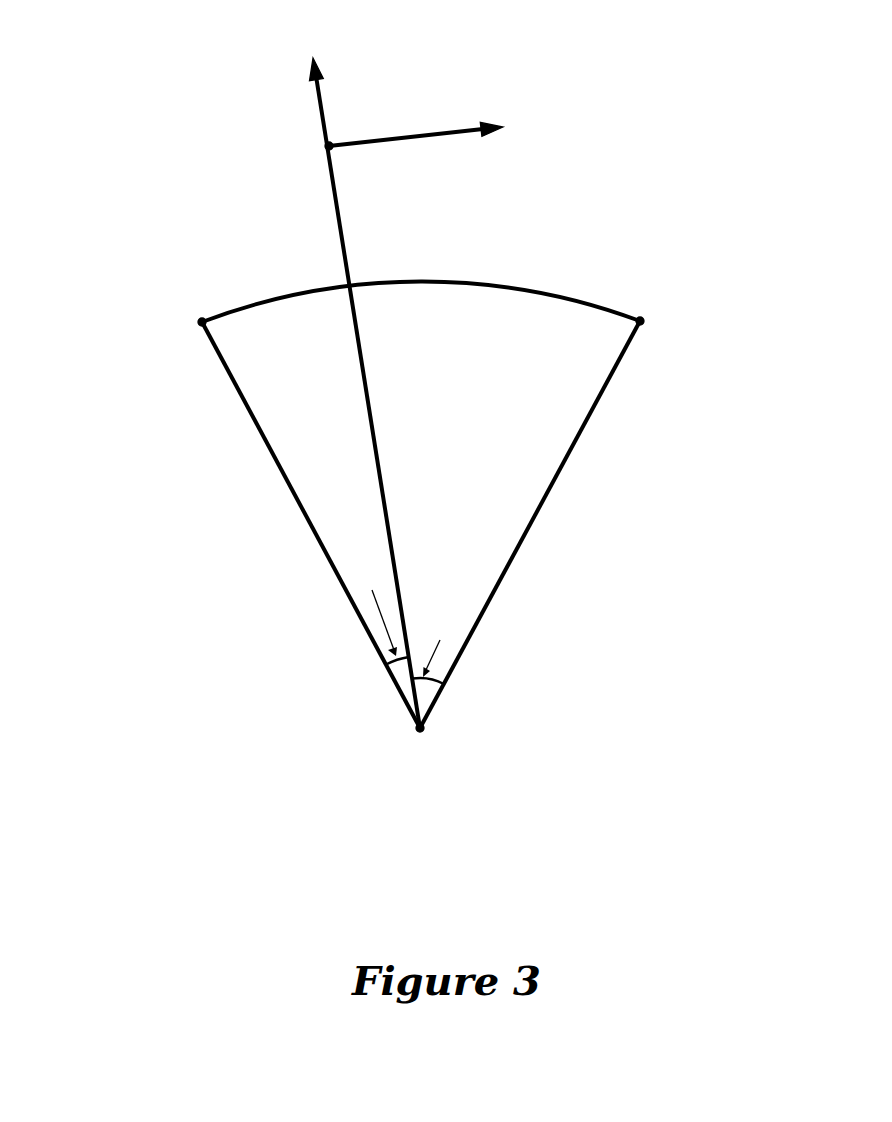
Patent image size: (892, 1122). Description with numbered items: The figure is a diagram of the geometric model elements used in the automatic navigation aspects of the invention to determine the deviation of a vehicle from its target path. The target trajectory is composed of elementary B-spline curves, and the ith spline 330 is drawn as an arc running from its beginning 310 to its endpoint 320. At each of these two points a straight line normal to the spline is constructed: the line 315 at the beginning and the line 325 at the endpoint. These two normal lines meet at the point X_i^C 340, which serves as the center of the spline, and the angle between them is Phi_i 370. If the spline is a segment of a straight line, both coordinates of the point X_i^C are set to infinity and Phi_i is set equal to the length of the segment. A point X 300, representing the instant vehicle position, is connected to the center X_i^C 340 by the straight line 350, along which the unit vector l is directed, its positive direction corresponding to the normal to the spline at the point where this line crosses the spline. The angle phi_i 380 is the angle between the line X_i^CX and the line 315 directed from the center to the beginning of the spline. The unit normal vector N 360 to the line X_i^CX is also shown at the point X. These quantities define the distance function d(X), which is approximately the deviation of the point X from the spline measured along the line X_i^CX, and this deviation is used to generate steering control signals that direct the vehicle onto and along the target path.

The point X 300 is at (326, 147).
The beginning of the spline 310 is at (208, 326).
The straight line normal to the spline at the beginning 315 is at (311, 525).
The endpoint of the spline 320 is at (633, 325).
The straight line normal to the spline at the endpoint 325 is at (530, 524).
The ith spline 330 is at (421, 287).
The point X_i^C 340 is at (418, 732).
The straight line connecting X and X_i^C 350 is at (342, 235).
The unit normal vector N 360 is at (438, 125).
The angle Phi_i 370 is at (437, 632).
The angle phi_i 380 is at (376, 601).